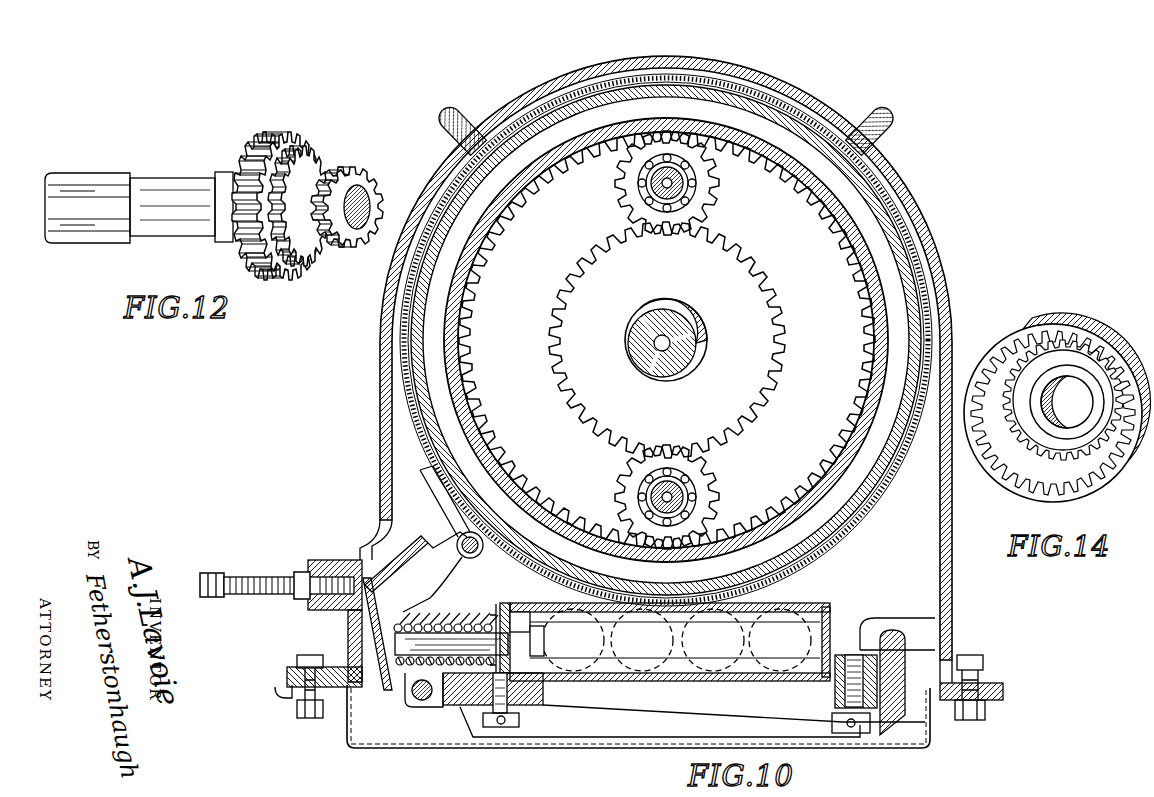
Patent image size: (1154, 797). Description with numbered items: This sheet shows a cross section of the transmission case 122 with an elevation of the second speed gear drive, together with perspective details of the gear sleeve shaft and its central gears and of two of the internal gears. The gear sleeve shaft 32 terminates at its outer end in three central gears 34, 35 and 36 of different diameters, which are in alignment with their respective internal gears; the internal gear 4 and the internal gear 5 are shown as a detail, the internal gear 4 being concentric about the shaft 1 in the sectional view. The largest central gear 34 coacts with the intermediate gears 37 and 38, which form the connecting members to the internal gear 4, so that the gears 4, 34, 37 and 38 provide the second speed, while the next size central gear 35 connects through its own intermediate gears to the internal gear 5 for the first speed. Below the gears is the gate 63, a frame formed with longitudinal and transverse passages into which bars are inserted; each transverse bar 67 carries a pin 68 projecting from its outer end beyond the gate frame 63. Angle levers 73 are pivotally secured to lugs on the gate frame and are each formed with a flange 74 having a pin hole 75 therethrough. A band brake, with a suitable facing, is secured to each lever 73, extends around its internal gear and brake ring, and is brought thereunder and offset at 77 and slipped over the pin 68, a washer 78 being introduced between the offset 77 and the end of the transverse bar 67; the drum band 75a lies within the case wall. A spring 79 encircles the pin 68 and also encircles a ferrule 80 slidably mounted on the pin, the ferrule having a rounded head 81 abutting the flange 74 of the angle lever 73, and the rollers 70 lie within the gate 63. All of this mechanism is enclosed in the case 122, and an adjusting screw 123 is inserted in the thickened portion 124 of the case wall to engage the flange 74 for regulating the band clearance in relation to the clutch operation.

In FIG. 10, the shaft 1 is at (708, 354).
In FIG. 10, the internal gear 4 is at (833, 217).
In FIG. 14, the internal gear 4 is at (1014, 371).
In FIG. 14, the internal gear 5 is at (986, 360).
In FIG. 12, the gear sleeve shaft 32 is at (168, 178).
In FIG. 10, the largest central gear 34 is at (762, 324).
In FIG. 12, the largest central gear 34 is at (283, 135).
In FIG. 12, the central gear 35 is at (320, 150).
In FIG. 12, the central gear 36 is at (353, 170).
In FIG. 10, the intermediate gear 37 is at (719, 191).
In FIG. 10, the intermediate gear 38 is at (714, 488).
In FIG. 10, the gate 63 is at (673, 683).
In FIG. 10, the transverse bar 67 is at (548, 708).
In FIG. 10, the pin 68 is at (412, 662).
In FIG. 10, the roller 70 is at (575, 667).
In FIG. 10, the angle lever 73 is at (453, 577).
In FIG. 10, the flange 74 is at (373, 598).
In FIG. 10, the pin hole 75 is at (377, 637).
In FIG. 10, the drum band 75a is at (938, 256).
In FIG. 10, the offset 77 is at (498, 604).
In FIG. 10, the washer 78 is at (512, 603).
In FIG. 10, the spring 79 is at (440, 622).
In FIG. 10, the ferrule 80 is at (403, 627).
In FIG. 10, the rounded head 81 is at (387, 657).
In FIG. 10, the case 122 is at (378, 435).
In FIG. 10, the adjusting screw 123 is at (243, 573).
In FIG. 10, the thickened portion 124 is at (326, 560).